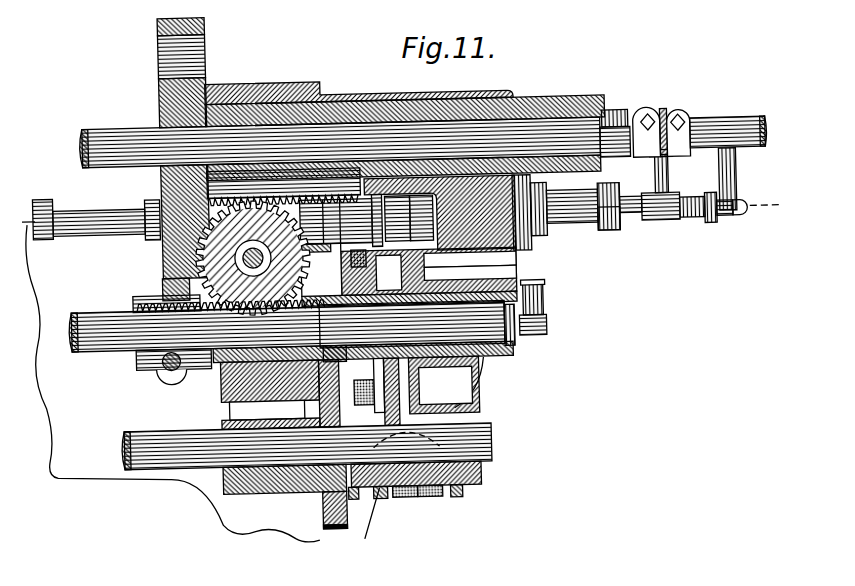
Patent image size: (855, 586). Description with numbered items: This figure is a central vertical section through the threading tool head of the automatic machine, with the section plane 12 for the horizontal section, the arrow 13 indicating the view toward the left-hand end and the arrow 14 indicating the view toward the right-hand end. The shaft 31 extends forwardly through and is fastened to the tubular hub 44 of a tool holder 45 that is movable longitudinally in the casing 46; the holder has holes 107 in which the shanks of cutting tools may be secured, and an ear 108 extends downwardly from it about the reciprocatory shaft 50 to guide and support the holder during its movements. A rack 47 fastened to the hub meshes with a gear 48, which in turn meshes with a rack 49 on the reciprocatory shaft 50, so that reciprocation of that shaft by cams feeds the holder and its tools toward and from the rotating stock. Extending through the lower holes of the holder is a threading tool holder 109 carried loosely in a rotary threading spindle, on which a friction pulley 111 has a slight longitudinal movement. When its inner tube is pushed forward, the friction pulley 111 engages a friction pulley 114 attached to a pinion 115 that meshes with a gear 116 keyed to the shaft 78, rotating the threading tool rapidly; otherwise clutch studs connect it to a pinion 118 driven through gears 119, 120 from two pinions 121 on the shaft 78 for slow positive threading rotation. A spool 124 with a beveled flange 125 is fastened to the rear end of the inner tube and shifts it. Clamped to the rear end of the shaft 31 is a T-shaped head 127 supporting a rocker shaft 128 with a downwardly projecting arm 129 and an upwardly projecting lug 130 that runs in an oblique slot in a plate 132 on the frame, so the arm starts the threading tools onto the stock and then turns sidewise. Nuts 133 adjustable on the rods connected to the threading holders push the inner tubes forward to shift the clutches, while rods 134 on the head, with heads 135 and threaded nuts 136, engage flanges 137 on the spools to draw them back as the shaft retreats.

The section plane 12— 12 is at (30, 159).
The arrow 13 is at (96, 89).
The arrow 14 is at (781, 86).
The shaft 31 is at (339, 142).
The tubular hub 44 is at (405, 138).
The tool holder 45 is at (184, 189).
The casing 46 is at (359, 92).
The rack 47 is at (284, 187).
The gear 48 is at (253, 258).
The rack 49 is at (231, 322).
The reciprocatory shaft 50 is at (292, 329).
The shaft 78 is at (307, 446).
The holes 107 is at (171, 52).
The ear 108 is at (166, 292).
The threading tool holder 109 is at (96, 220).
The friction pulley 111 is at (366, 220).
The friction pulley 114 is at (412, 324).
The pinion 115 is at (332, 358).
The gear 116 is at (315, 504).
The pinion 118 is at (416, 241).
The gear 119 is at (426, 262).
The gear 120 is at (445, 278).
The pinions 121 is at (427, 498).
The spool 124 is at (570, 229).
The beveled flange 125 is at (547, 240).
The T-shaped head 127 is at (699, 125).
The rocker shaft 128 is at (728, 122).
The arm 129 is at (722, 181).
The lug 130 is at (643, 119).
The plate 132 is at (623, 117).
The nuts 133 is at (637, 231).
The rods 134 is at (702, 231).
The heads 135 is at (610, 237).
The threaded nuts 136 is at (714, 232).
The flanges 137 is at (609, 239).